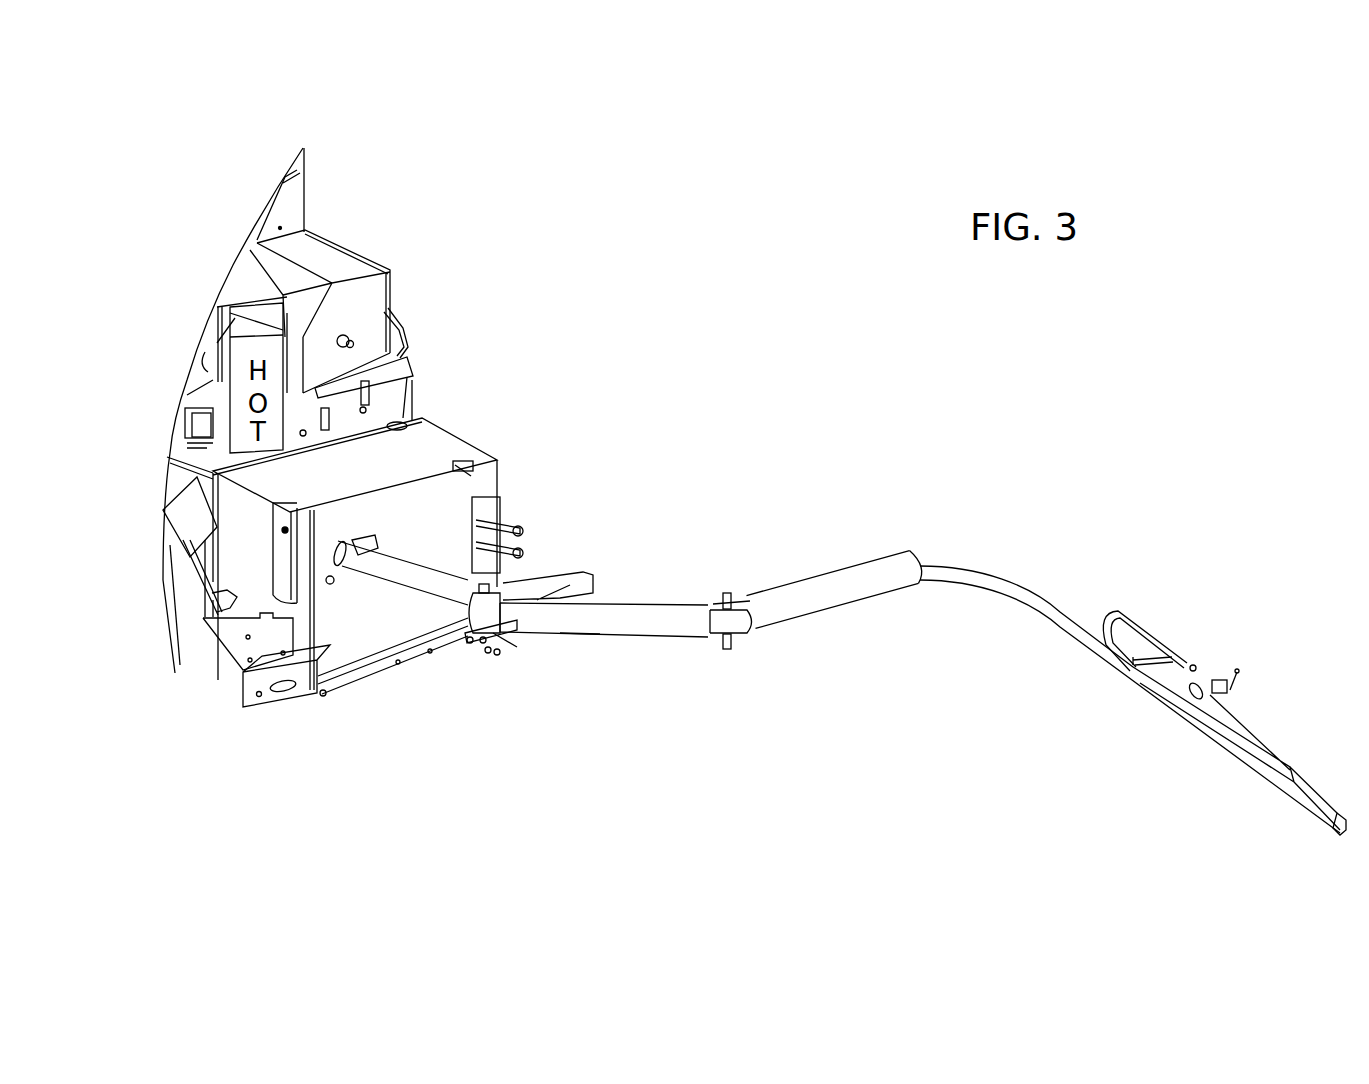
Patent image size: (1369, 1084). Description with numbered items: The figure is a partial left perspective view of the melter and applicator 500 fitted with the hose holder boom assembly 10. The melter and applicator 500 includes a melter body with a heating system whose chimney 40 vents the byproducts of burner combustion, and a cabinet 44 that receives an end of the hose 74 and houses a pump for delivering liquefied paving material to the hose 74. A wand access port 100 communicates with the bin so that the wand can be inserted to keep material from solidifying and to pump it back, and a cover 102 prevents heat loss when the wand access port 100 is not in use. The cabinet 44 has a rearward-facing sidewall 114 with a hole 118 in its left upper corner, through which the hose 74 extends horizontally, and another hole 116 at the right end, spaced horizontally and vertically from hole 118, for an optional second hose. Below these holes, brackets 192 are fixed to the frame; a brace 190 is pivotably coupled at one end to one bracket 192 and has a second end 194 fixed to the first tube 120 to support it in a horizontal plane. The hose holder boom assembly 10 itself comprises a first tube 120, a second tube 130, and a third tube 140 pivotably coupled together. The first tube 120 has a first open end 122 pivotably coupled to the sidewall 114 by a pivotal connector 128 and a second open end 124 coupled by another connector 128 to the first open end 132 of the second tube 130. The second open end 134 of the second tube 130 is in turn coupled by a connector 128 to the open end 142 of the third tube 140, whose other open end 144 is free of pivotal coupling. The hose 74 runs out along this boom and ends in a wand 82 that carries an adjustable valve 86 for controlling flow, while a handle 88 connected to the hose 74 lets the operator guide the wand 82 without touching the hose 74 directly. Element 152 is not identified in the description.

The hose holder boom assembly 10 is at (640, 572).
The chimney 40 is at (240, 390).
The cabinet 44 is at (443, 423).
The hose 74 is at (510, 577).
The wand 82 is at (1313, 837).
The adjustable valve 86 is at (1343, 810).
The handle 88 is at (1145, 628).
The wand access port 100 is at (408, 363).
The cover 102 is at (405, 328).
The sidewall 114 is at (460, 490).
The hole 116 is at (482, 535).
The hole 118 is at (285, 530).
The first tube 120 is at (407, 582).
The first open end 122 is at (363, 550).
The second open end 124 is at (447, 598).
The pivotal device or connector 128 is at (328, 575).
The second tube 130 is at (623, 622).
The first open end 132 is at (515, 613).
The second open end 134 is at (677, 622).
The third tube 140 is at (857, 587).
The open end 142 is at (765, 613).
The other open end 144 is at (893, 570).
The mounting plate 152 is at (508, 547).
The brace 190 is at (380, 670).
The bracket 192 is at (323, 693).
The second end 194 is at (468, 647).
The melter and applicator 500 is at (327, 217).